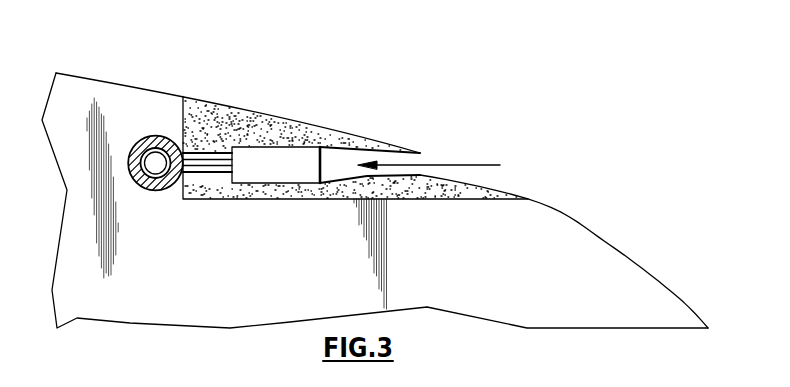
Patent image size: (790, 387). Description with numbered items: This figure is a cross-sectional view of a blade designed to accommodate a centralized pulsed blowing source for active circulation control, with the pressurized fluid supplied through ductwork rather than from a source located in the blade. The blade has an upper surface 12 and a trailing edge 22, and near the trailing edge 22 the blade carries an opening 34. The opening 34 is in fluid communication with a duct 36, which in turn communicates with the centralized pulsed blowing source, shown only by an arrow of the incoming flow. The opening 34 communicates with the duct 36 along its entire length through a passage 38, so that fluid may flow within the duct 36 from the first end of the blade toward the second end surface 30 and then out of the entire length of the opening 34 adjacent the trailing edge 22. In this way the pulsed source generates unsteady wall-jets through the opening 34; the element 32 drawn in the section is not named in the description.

The upper surface 12 is at (117, 83).
The trailing edge 22 is at (688, 300).
The second end surface 30 is at (215, 102).
The sensor housing 32 is at (283, 160).
The opening 34 is at (458, 164).
The duct 36 is at (162, 136).
The passage 38 is at (223, 152).